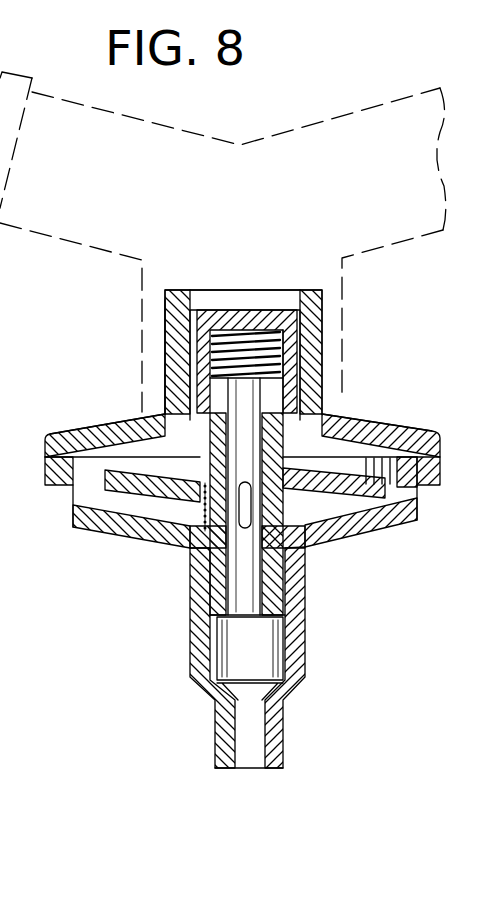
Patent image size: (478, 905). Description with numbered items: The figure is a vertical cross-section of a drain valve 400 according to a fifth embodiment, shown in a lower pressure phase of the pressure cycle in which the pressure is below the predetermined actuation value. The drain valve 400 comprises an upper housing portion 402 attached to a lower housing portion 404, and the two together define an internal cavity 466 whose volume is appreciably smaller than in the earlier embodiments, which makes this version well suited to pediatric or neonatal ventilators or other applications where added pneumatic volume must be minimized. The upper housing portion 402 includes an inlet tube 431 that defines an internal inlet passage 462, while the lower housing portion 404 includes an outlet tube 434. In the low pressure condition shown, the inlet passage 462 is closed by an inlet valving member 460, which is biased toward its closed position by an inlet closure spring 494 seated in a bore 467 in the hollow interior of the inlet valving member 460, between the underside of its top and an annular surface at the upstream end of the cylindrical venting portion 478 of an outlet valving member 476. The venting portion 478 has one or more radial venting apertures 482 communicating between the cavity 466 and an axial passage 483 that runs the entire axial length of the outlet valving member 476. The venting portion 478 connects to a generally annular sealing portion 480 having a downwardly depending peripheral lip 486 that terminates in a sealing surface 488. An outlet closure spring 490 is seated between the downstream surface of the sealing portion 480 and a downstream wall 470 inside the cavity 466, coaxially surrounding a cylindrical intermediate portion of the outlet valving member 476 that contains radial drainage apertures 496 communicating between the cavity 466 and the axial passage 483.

The drain valve 400 is at (106, 332).
The inlet tube 431 is at (165, 349).
The inlet valving member 460 is at (258, 292).
The inlet passage 462 is at (284, 291).
The bore 467 is at (318, 297).
The inlet closure spring 494 is at (323, 332).
The cylindrical venting portion 478 is at (283, 382).
The axial passage 483 is at (232, 585).
The outlet tube 434 is at (305, 596).
The downstream wall 470 is at (324, 512).
The upper housing portion 402 is at (405, 432).
The internal cavity 466 is at (168, 418).
The radial venting apertures 482 is at (322, 412).
The outlet valving member 476 is at (330, 418).
The annular sealing portion 480 is at (75, 497).
The sealing surface 488 is at (418, 512).
The peripheral lip 486 is at (412, 492).
The radial drainage apertures 496 is at (205, 503).
The outlet closure spring 490 is at (160, 542).
The lower housing portion 404 is at (392, 522).